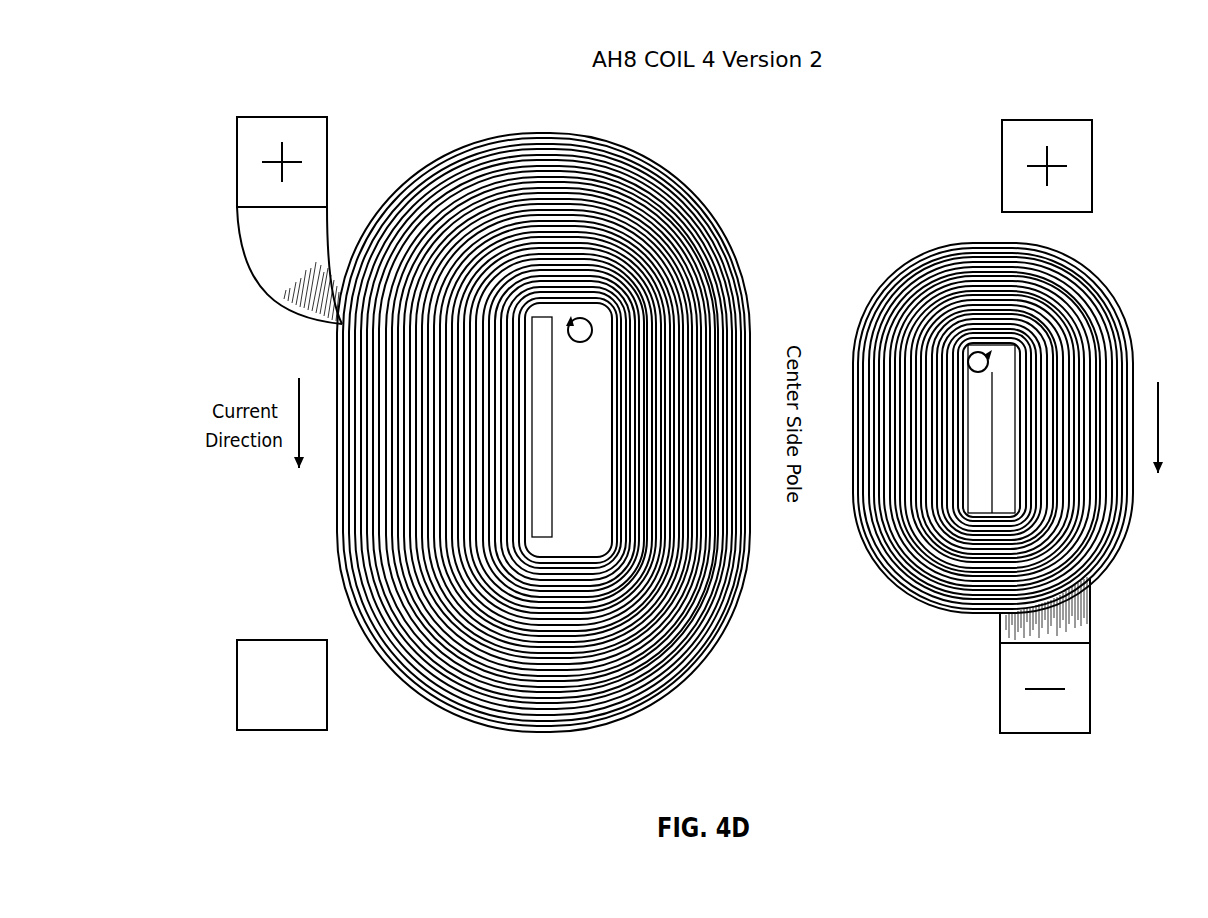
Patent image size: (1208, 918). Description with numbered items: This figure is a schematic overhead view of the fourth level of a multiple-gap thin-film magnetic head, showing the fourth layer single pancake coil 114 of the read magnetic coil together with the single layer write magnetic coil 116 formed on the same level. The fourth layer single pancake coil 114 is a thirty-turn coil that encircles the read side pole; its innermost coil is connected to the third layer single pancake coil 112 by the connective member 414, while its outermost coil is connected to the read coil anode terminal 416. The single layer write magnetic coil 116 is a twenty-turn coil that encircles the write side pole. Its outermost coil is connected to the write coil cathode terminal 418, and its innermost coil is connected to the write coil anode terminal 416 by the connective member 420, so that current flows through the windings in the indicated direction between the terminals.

The third layer single pancake coil 112 is at (597, 539).
The fourth layer single pancake coil 114 is at (583, 132).
The single layer write magnetic coil 116 is at (1097, 292).
The connective member 414 is at (556, 498).
The read coil anode terminal 416 is at (342, 142).
The write coil cathode terminal 418 is at (1090, 742).
The connective member 420 is at (1007, 490).